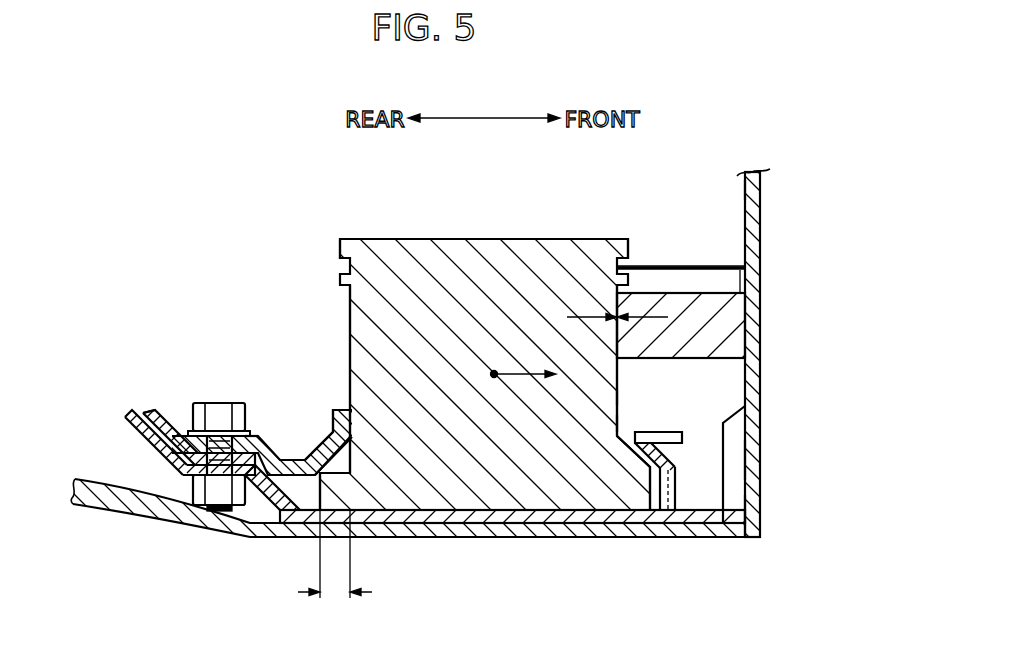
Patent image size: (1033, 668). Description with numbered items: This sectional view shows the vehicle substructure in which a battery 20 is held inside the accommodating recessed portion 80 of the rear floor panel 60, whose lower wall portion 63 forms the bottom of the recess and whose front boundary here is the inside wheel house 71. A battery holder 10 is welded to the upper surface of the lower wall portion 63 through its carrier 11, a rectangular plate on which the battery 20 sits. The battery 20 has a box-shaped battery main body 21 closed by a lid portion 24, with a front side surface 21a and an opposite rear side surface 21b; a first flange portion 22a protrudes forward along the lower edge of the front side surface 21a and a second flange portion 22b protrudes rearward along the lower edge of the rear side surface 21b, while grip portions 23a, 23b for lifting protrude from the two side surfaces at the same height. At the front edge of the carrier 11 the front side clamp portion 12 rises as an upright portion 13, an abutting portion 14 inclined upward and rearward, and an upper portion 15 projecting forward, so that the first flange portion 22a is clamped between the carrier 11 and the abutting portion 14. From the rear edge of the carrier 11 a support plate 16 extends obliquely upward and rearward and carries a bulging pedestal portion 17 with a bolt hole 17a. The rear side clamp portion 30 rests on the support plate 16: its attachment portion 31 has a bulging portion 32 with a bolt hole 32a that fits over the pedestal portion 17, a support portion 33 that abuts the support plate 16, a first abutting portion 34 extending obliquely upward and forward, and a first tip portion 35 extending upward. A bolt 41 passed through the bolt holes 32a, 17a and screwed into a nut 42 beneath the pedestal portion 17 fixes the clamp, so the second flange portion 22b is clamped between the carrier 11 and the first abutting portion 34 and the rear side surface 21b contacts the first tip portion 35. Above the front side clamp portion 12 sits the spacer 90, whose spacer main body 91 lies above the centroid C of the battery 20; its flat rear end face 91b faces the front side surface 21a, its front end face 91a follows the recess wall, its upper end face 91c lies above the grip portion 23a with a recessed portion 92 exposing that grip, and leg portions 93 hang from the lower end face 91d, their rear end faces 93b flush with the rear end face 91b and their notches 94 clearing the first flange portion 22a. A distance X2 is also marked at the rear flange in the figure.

The battery holder 10 is at (200, 333).
The carrier 11 is at (392, 538).
The front side clamp portion 12 is at (724, 440).
The upright portion 13 is at (676, 495).
The abutting portion 14 is at (665, 462).
The upper portion 15 is at (660, 431).
The support plate 16 is at (125, 425).
The pedestal portion 17 is at (182, 477).
The bolt hole 17a is at (182, 461).
The battery 20 is at (378, 238).
The battery main body 21 is at (349, 360).
The front side surface 21a is at (621, 380).
The rear side surface 21b is at (349, 325).
The first flange portion 22a is at (632, 524).
The second flange portion 22b is at (318, 500).
The grip portion 23a is at (632, 268).
The grip portion 23b is at (339, 280).
The lid portion 24 is at (519, 238).
The rear side clamp portion 30 is at (135, 410).
The attachment portion 31 is at (182, 410).
The bulging portion 32 is at (268, 435).
The bolt hole 32a is at (243, 410).
The support portion 33 is at (168, 416).
The first abutting portion 34 is at (310, 458).
The first tip portion 35 is at (332, 410).
The bolt 41 is at (216, 403).
The nut 42 is at (205, 512).
The rear floor panel 60 is at (740, 508).
The lower wall portion 63 is at (746, 528).
The inside wheel house 71 is at (762, 222).
The accommodating recessed portion 80 is at (739, 190).
The spacer 90 is at (656, 266).
The spacer main body 91 is at (710, 262).
The front end face 91a is at (762, 326).
The rear end face 91b is at (610, 320).
The upper end face 91c is at (746, 268).
The lower end face 91d is at (746, 358).
The recessed portion 92 is at (690, 292).
The leg portions 93 is at (748, 458).
The rear end faces 93b is at (616, 398).
The notches 94 is at (616, 428).
The centroid C is at (521, 361).
The distance X2 is at (335, 535).